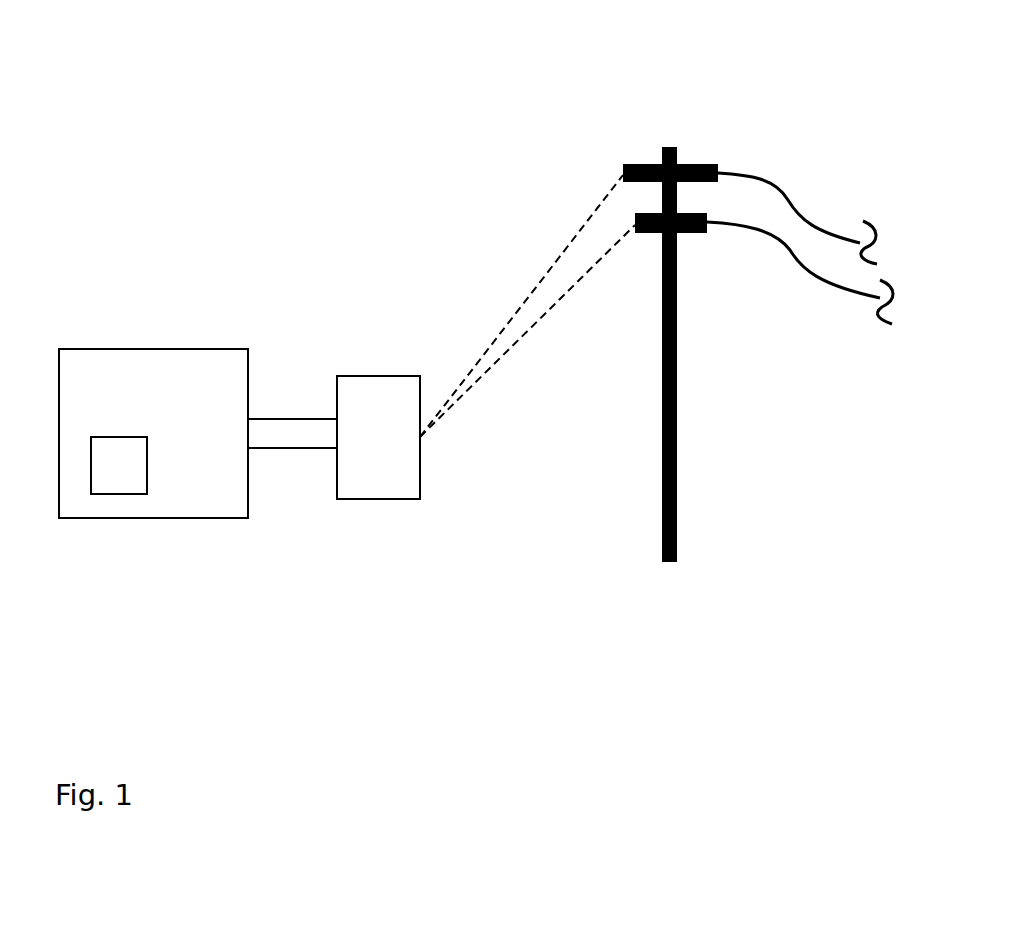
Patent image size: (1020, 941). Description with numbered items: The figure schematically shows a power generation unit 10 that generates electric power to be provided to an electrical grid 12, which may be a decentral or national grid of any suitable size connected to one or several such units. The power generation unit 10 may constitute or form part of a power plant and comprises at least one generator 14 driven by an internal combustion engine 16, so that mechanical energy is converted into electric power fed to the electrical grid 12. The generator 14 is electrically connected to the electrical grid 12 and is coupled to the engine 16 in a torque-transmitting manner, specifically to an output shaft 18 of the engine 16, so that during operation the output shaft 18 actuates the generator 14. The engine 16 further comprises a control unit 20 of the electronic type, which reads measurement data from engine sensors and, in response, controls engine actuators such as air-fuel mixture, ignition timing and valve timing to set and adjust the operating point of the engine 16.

The power generation unit 10 is at (118, 228).
The electrical grid 12 is at (660, 104).
The generator 14 is at (373, 389).
The internal combustion engine 16 is at (183, 360).
The output shaft 18 is at (289, 433).
The control unit 20 is at (132, 477).